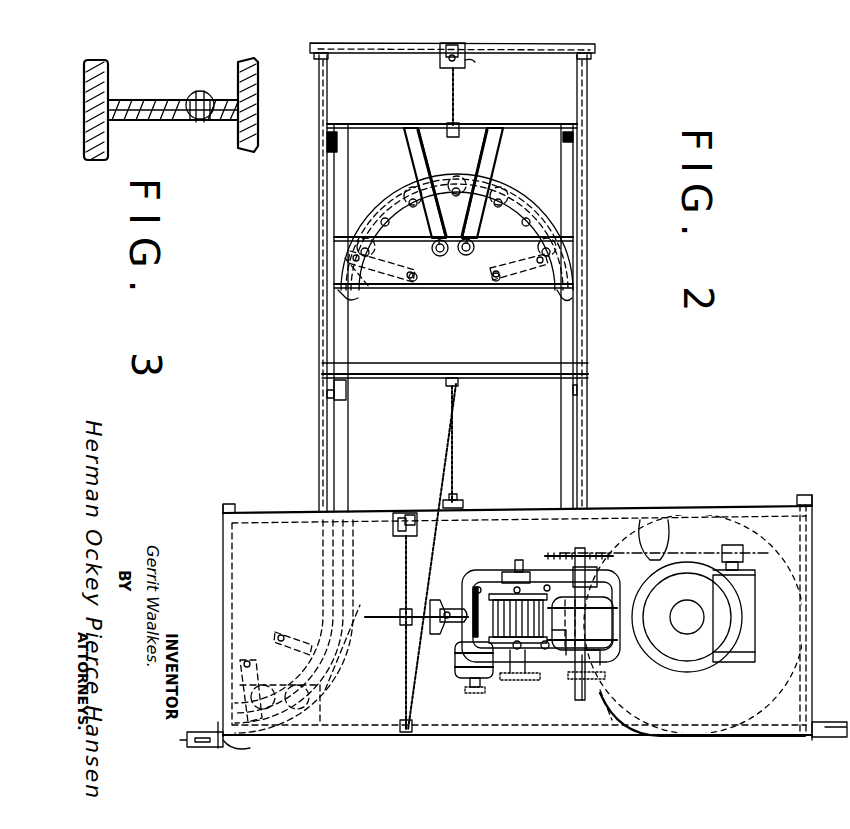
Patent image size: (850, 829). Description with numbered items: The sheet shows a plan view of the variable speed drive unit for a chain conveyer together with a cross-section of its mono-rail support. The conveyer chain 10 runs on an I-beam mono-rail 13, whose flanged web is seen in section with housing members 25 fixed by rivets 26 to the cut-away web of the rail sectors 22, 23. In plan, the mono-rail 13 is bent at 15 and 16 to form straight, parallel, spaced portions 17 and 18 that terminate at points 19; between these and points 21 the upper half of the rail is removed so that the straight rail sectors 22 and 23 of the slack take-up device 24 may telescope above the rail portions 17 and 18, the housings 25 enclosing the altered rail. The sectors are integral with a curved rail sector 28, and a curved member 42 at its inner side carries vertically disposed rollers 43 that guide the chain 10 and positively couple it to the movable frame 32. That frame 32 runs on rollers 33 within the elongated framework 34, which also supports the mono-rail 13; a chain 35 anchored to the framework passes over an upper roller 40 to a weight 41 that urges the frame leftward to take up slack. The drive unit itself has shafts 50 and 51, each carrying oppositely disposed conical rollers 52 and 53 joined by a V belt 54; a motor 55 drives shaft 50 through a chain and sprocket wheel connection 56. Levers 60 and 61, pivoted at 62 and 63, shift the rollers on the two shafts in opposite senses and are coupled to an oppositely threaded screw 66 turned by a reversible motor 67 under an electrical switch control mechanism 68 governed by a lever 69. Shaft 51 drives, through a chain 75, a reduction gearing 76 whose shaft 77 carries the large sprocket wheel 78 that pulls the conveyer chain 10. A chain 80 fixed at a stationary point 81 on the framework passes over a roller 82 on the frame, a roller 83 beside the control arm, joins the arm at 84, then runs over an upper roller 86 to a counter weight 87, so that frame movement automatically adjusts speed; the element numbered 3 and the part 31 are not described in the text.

In FIG. 2, the cross bar 3 is at (325, 390).
In FIG. 2, the conveyer chain 10 is at (200, 746).
In FIG. 3, the mono-rail 13 is at (135, 122).
In FIG. 2, the mono-rail 13 is at (226, 746).
In FIG. 2, the bend of the mono-rail 15 is at (612, 731).
In FIG. 2, the bend of the mono-rail 16 is at (322, 735).
In FIG. 2, the straight rail portion 17 is at (590, 508).
In FIG. 3, the straight rail portion 18 is at (160, 120).
In FIG. 2, the straight rail portion 18 is at (330, 541).
In FIG. 2, the termination point 19 is at (349, 397).
In FIG. 2, the rail cut-away point 21 is at (341, 592).
In FIG. 2, the straight rail sector 22 is at (561, 300).
In FIG. 3, the straight rail sector 23 is at (240, 120).
In FIG. 2, the straight rail sector 23 is at (346, 300).
In FIG. 2, the slack take-up device 24 is at (514, 187).
In FIG. 3, the housing member 25 is at (185, 121).
In FIG. 3, the rivets 26 is at (206, 122).
In FIG. 2, the curved rail sector 28 is at (442, 172).
In FIG. 2, the clip 31 is at (349, 393).
In FIG. 2, the movable frame 32 is at (374, 138).
In FIG. 2, the rollers 33 is at (319, 128).
In FIG. 2, the supporting framework 34 is at (318, 72).
In FIG. 2, the chain 35 is at (451, 108).
In FIG. 2, the upper roller 40 is at (455, 44).
In FIG. 2, the weight 41 is at (466, 62).
In FIG. 2, the curved member 42 is at (410, 236).
In FIG. 2, the vertically disposed rollers 43 is at (404, 254).
In FIG. 2, the shaft 50 is at (511, 600).
In FIG. 2, the shaft 51 is at (560, 554).
In FIG. 2, the conical roller 52 is at (448, 606).
In FIG. 2, the conical roller 53 is at (519, 650).
In FIG. 2, the V belt 54 is at (476, 612).
In FIG. 2, the motor 55 is at (578, 660).
In FIG. 2, the chain and sprocket wheel connection 56 is at (542, 650).
In FIG. 2, the lever 60 is at (545, 588).
In FIG. 2, the lever 61 is at (554, 652).
In FIG. 2, the pivot 62 is at (521, 592).
In FIG. 2, the pivot 63 is at (564, 656).
In FIG. 2, the screw 66 is at (492, 642).
In FIG. 2, the reversible motor 67 is at (496, 676).
In FIG. 2, the electrical switch control mechanism 68 is at (418, 690).
In FIG. 2, the lever 69 is at (400, 617).
In FIG. 2, the chain 75 is at (654, 556).
In FIG. 2, the reduction gearing 76 is at (746, 652).
In FIG. 2, the shaft 77 is at (687, 628).
In FIG. 2, the large sprocket wheel 78 is at (726, 512).
In FIG. 2, the chain 80 is at (444, 460).
In FIG. 2, the stationary point 81 is at (462, 504).
In FIG. 2, the roller 82 is at (456, 387).
In FIG. 2, the roller 83 is at (400, 714).
In FIG. 2, the connection 84 is at (428, 650).
In FIG. 2, the upper roller 86 is at (396, 534).
In FIG. 2, the counter weight 87 is at (410, 536).